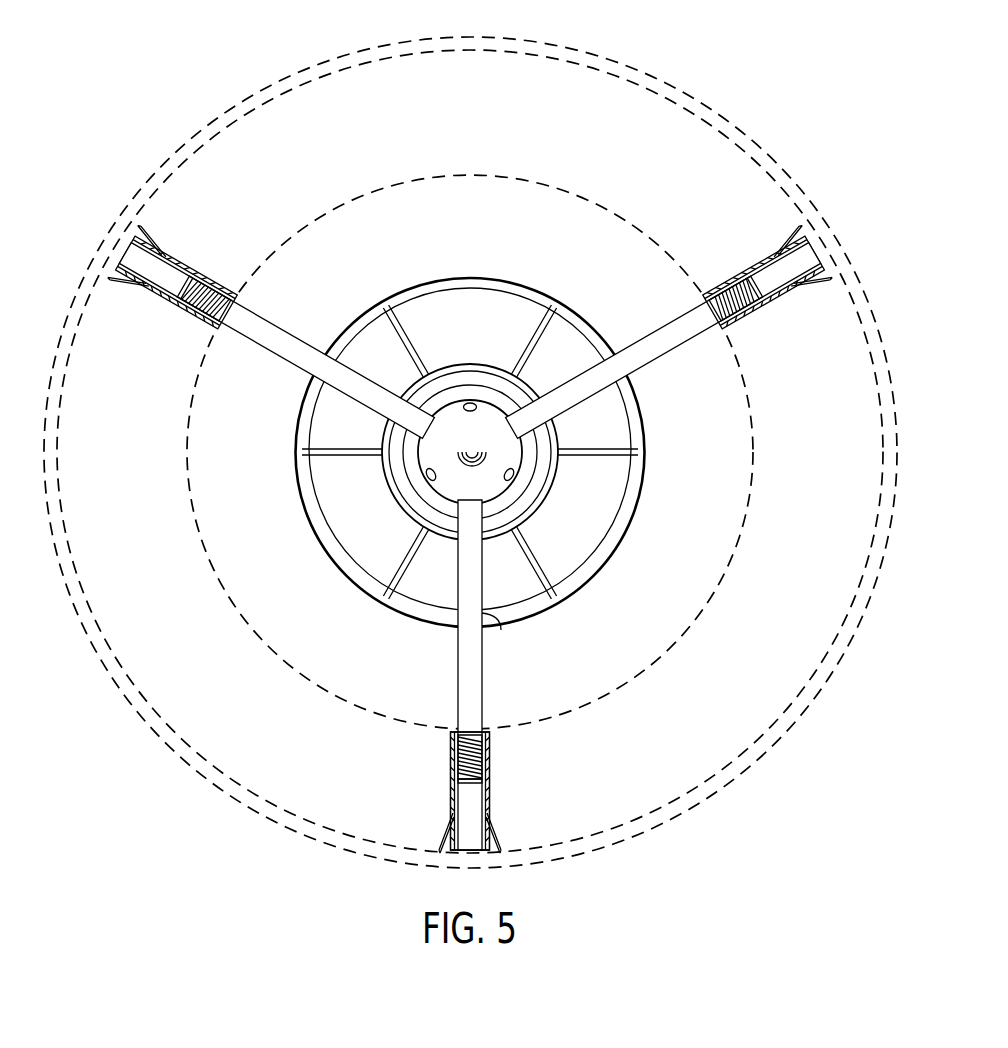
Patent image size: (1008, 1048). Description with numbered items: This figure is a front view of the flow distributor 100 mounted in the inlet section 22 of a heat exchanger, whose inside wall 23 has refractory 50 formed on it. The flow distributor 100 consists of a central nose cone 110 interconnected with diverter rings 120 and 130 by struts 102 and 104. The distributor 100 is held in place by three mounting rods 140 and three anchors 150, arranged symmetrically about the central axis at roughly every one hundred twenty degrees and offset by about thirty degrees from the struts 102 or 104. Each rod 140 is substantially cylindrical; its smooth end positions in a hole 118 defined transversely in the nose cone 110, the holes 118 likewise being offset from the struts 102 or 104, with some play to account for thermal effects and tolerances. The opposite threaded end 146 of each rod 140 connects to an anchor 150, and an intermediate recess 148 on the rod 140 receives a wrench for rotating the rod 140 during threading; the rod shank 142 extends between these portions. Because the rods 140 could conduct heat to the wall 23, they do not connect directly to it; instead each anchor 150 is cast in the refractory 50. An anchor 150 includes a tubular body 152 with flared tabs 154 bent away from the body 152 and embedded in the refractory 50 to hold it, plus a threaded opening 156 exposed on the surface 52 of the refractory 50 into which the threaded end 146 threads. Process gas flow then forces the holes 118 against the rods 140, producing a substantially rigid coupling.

The inlet section 22 is at (452, 28).
The inside wall 23 is at (519, 64).
The refractory 50 is at (488, 112).
The surface of the refractory 52 is at (351, 210).
The flow distributor 100 is at (470, 413).
The struts 102 is at (536, 334).
The struts 104 is at (348, 447).
The nose cone 110 is at (472, 405).
The hole 118 is at (520, 483).
The diverter ring 120 is at (540, 384).
The diverter ring 130 is at (598, 314).
The mounting rod 140 is at (469, 546).
The tube 142 is at (482, 692).
The threaded end 146 is at (483, 752).
The intermediate recess 148 is at (494, 622).
The anchor 150 is at (470, 529).
The tubular body 152 is at (450, 793).
The flared tabs 154 is at (443, 837).
The threaded opening 156 is at (456, 751).